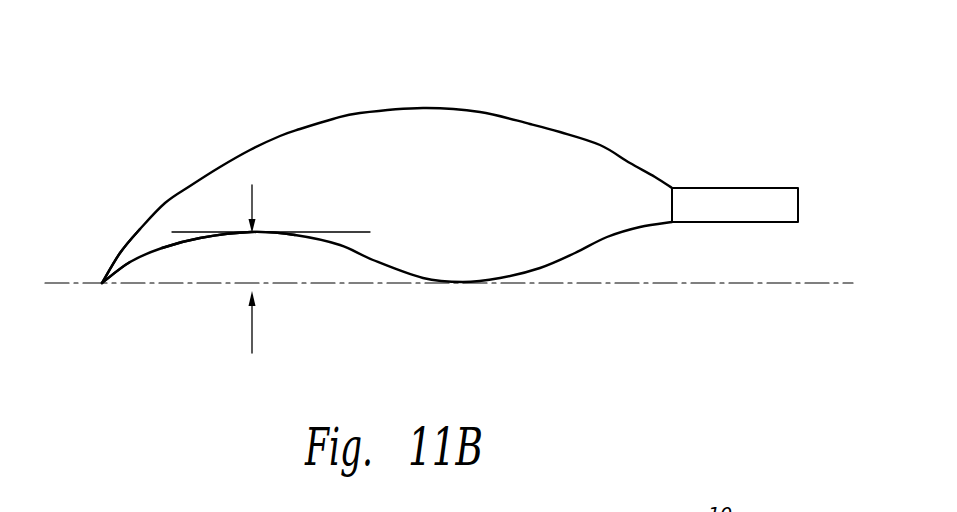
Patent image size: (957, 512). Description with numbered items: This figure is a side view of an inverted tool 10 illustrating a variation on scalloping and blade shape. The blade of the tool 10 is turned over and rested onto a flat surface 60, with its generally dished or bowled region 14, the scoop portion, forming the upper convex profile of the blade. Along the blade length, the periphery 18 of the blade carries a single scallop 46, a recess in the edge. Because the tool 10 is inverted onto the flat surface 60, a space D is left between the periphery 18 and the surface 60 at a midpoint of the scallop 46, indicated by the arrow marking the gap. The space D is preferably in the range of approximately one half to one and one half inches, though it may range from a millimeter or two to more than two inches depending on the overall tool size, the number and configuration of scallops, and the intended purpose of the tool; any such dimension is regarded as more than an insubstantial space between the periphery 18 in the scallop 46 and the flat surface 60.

The tool 10 is at (436, 211).
The dished or bowled region 14 is at (436, 136).
The periphery 18 is at (447, 283).
The scallop 46 is at (207, 264).
The flat surface 60 is at (75, 284).
The space D is at (252, 340).